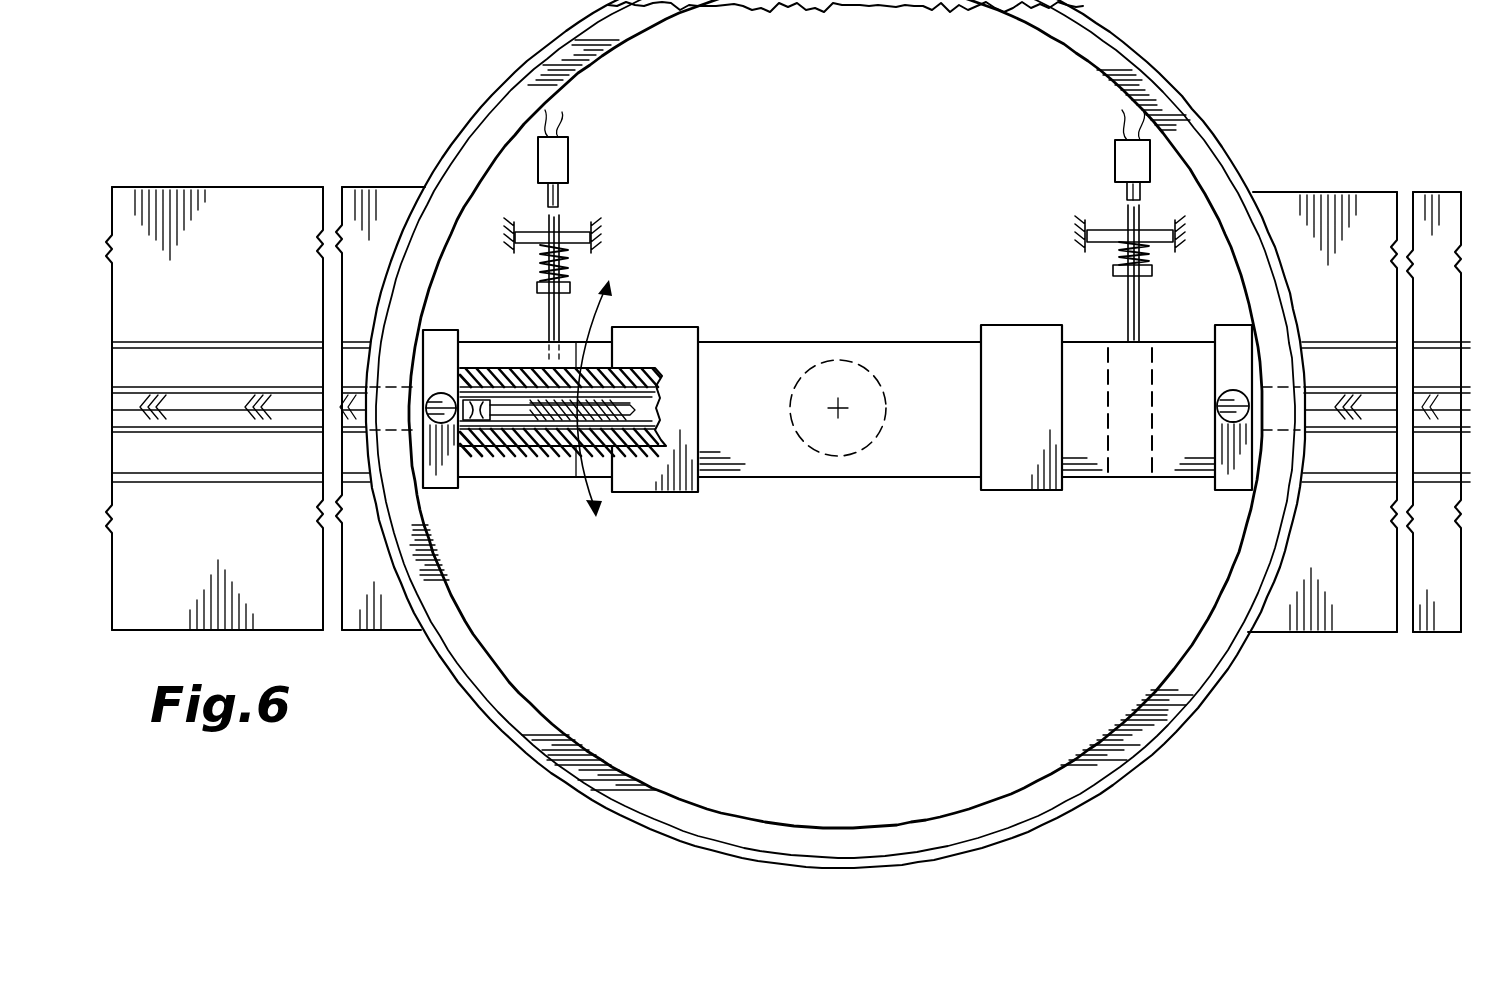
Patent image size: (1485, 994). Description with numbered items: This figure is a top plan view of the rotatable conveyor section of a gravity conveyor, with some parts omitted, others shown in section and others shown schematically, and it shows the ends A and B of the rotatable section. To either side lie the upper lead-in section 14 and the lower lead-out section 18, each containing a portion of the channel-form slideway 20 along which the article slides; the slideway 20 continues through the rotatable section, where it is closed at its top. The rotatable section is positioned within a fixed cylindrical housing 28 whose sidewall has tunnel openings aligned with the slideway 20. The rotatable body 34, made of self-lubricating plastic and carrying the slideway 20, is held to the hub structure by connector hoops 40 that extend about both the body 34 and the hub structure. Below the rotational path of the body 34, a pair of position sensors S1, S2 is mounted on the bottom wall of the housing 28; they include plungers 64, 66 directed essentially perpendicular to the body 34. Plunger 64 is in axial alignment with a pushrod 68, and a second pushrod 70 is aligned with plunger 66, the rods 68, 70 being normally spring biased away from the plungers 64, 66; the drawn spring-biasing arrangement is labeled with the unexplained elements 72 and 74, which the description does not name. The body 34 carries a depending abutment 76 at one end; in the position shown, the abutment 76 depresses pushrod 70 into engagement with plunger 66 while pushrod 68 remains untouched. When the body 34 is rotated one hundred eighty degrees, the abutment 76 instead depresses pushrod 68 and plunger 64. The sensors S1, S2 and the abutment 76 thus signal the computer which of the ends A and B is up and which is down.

The upper lead-in section 14 is at (248, 188).
The lower lead-out section 18 is at (1330, 192).
The slideway 20 is at (228, 398).
The cylindrical housing 28 is at (1210, 690).
The body 34 is at (768, 480).
The connector hoops 40 is at (680, 332).
The position sensor S1 is at (570, 157).
The position sensor S2 is at (1112, 163).
The plunger 64 is at (560, 200).
The plunger 66 is at (1128, 192).
The pushrod 68 is at (598, 290).
The second pushrod 70 is at (1127, 300).
The spring plunger 72 is at (540, 262).
The guide bracket 74 is at (1105, 240).
The depending abutment 76 is at (1130, 470).
The end A is at (472, 491).
The end B is at (1198, 496).